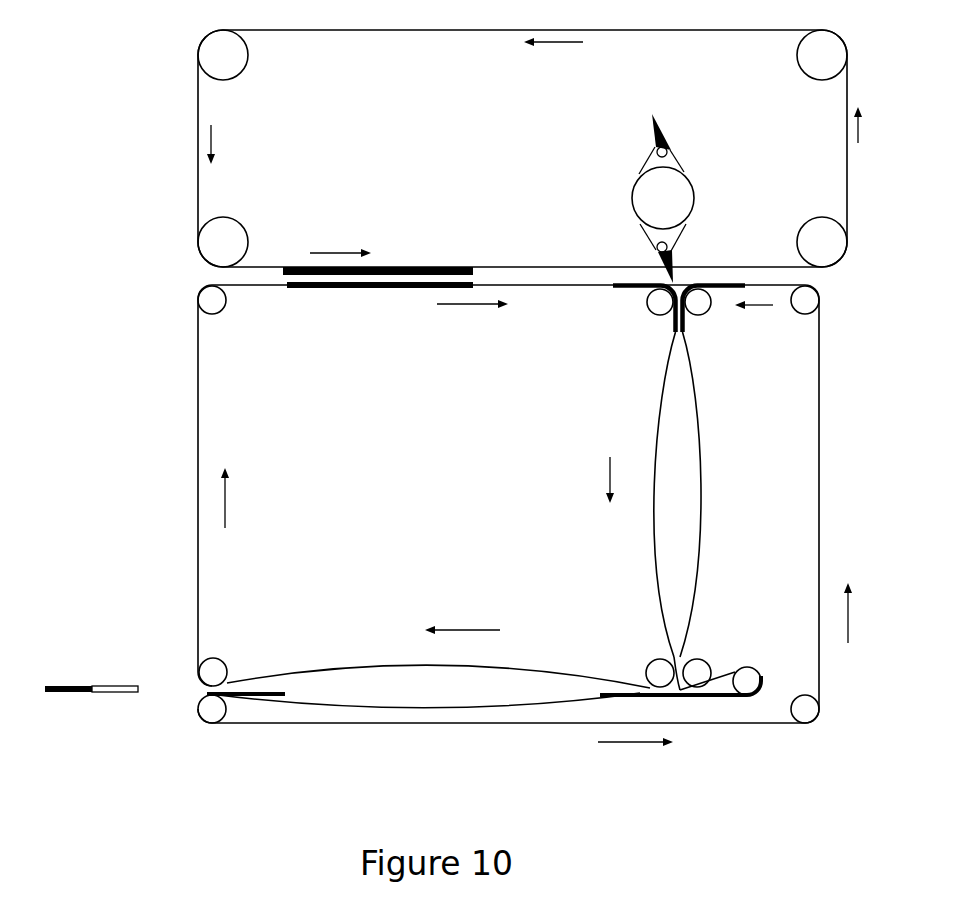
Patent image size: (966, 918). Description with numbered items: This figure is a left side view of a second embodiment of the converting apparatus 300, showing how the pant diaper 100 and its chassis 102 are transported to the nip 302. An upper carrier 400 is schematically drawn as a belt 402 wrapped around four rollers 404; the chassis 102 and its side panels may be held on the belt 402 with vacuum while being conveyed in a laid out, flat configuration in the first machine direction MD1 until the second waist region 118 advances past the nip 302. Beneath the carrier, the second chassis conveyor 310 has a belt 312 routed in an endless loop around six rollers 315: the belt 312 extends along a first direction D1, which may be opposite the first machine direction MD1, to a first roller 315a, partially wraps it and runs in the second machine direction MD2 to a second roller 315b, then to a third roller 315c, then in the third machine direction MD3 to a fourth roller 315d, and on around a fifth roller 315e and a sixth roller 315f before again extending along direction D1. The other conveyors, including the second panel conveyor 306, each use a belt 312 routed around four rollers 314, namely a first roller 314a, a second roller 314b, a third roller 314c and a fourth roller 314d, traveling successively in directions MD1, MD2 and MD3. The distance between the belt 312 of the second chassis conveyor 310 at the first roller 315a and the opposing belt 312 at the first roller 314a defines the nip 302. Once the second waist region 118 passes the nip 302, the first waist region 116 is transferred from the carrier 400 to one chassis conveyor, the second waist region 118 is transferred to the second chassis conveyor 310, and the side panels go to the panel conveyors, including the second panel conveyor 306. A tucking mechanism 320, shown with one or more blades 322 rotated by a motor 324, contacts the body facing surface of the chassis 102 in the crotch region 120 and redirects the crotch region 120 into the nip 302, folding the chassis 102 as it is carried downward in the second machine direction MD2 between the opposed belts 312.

The absorbent article web / laminate 100 is at (227, 428).
The chassis 102 is at (372, 356).
The first waist region 116 is at (297, 267).
The second waist region 118 is at (450, 267).
The crotch region 120 is at (680, 332).
The converting apparatus 300 is at (510, 130).
The nip 302 is at (654, 272).
The second panel conveyor 306 is at (198, 477).
The second chassis conveyor 310 is at (812, 502).
The belt 312 is at (516, 552).
The rollers 314 is at (388, 486).
The first roller 314a is at (646, 307).
The second roller 314b is at (655, 663).
The third roller 314c is at (214, 668).
The fourth roller 314d is at (210, 303).
The rollers 315 is at (529, 556).
The first roller 315a is at (698, 305).
The second roller 315b is at (698, 667).
The third roller 315c is at (737, 677).
The fourth roller 315d is at (213, 713).
The fifth roller 315e is at (800, 715).
The sixth roller 315f is at (807, 303).
The tucking mechanism 320 is at (685, 183).
The blades 322 is at (655, 137).
The motor 324 is at (678, 190).
The carrier 400 is at (198, 165).
The belt 402 is at (387, 30).
The rollers 404 is at (222, 65).
The first machine direction MD1 is at (330, 252).
The second machine direction MD2 is at (610, 481).
The third machine direction MD3 is at (462, 630).
The first direction D1 is at (743, 270).